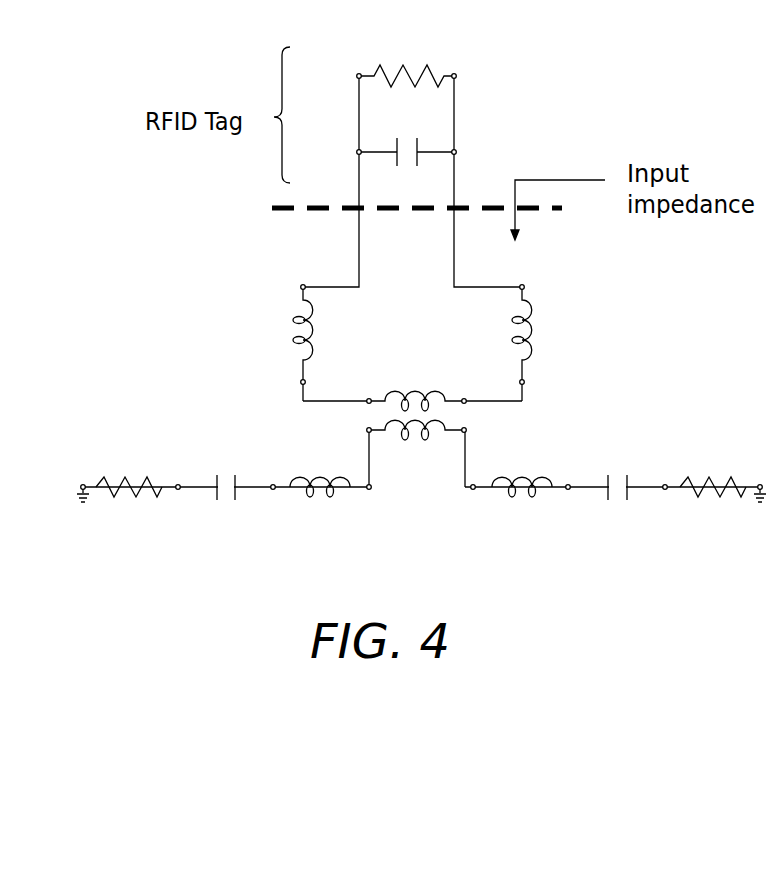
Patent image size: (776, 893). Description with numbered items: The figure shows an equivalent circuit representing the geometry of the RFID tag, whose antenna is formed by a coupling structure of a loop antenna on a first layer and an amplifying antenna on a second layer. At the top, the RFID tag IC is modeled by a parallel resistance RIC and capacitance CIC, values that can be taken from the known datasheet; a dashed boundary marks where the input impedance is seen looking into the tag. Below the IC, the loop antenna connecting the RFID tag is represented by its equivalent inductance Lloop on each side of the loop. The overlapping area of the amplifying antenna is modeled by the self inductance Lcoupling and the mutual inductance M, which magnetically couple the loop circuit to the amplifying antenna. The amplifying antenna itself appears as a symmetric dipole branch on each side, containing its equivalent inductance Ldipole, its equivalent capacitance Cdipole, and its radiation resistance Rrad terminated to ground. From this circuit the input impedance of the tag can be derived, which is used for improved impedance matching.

The equivalent resistance of the RFID tag IC RIC is at (406, 56).
The equivalent capacitance of the RFID tag IC CIC is at (406, 135).
The equivalent inductance of the loop antenna Lloop is at (416, 344).
The equivalent self inductance of the overlapping area Lcoupling is at (412, 378).
The mutual inductance M is at (393, 447).
The radiation resistance of the amplifying antenna Rrad is at (424, 512).
The equivalent capacitance of the amplifying antenna Cdipole is at (429, 511).
The equivalent inductance of the amplifying antenna Ldipole is at (423, 512).